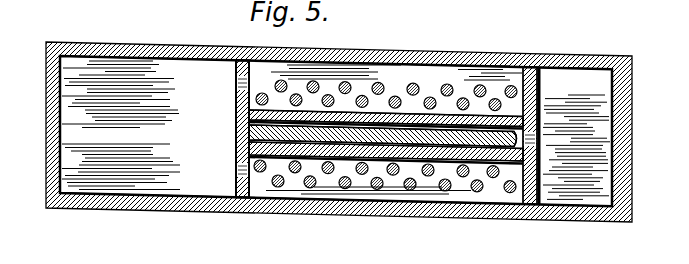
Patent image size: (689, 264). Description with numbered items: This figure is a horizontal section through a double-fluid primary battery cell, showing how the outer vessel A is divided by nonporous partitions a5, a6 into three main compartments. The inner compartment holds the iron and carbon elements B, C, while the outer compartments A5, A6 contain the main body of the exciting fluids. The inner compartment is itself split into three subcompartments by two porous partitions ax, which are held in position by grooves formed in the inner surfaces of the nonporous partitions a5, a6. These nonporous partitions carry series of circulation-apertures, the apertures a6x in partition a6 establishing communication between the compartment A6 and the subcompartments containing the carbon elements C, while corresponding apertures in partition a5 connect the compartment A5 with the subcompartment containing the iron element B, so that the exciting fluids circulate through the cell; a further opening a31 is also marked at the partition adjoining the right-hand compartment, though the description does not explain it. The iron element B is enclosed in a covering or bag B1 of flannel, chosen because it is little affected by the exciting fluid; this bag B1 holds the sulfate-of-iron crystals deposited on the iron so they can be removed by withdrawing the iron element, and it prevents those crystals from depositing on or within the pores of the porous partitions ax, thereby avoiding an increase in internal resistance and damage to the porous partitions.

The outer vessel A is at (339, 124).
The outer compartment A6 is at (121, 125).
The nonporous partition a6 is at (236, 84).
The circulation-apertures a6x is at (237, 168).
The porous partition ax is at (237, 103).
The iron element B is at (237, 146).
The covering or bag B1 is at (506, 122).
The carbon element C is at (394, 99).
The opening in right partition wall a31 is at (541, 131).
The outer compartment A5 is at (576, 147).
The nonporous partition a5 is at (544, 197).